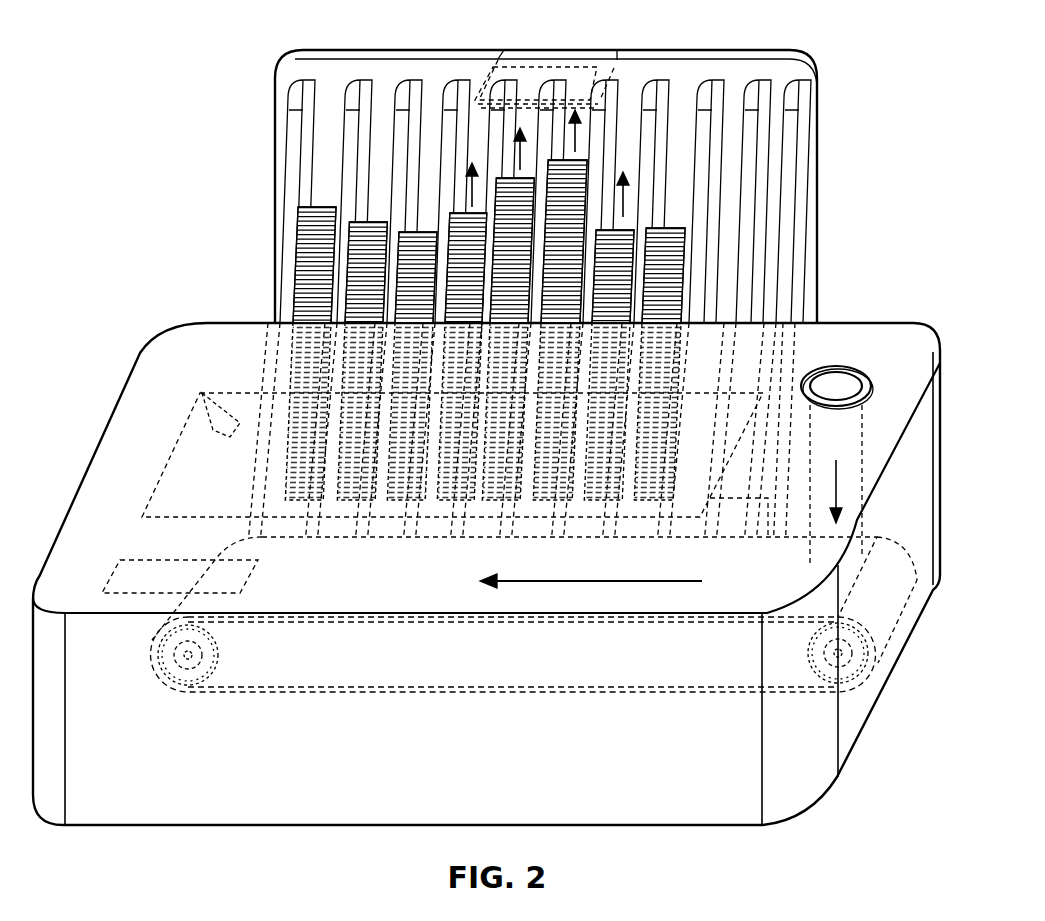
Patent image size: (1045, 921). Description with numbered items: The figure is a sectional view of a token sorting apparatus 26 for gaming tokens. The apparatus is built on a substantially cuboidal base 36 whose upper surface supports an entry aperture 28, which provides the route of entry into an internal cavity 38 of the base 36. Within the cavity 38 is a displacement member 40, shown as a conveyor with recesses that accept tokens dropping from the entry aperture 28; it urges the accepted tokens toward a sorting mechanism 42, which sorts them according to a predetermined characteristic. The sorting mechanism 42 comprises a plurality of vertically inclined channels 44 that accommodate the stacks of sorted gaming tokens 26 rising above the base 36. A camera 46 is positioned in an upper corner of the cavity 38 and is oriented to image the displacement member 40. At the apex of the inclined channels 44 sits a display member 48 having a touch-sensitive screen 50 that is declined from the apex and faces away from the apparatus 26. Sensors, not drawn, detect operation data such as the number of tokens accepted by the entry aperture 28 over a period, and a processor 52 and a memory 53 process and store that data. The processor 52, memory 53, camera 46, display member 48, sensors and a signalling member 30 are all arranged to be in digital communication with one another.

The token sorting apparatus 26 is at (100, 384).
The entry aperture 28 is at (830, 364).
The signalling member 30 is at (860, 368).
The base 36 is at (170, 363).
The internal cavity 38 is at (843, 482).
The displacement member 40 is at (278, 693).
The sorting mechanism 42 is at (282, 508).
The vertically inclined channels 44 is at (770, 197).
The camera 46 is at (202, 394).
The display member 48 is at (577, 52).
The touch-sensitive screen 50 is at (532, 78).
The processor 52 is at (128, 558).
The memory 53 is at (168, 592).